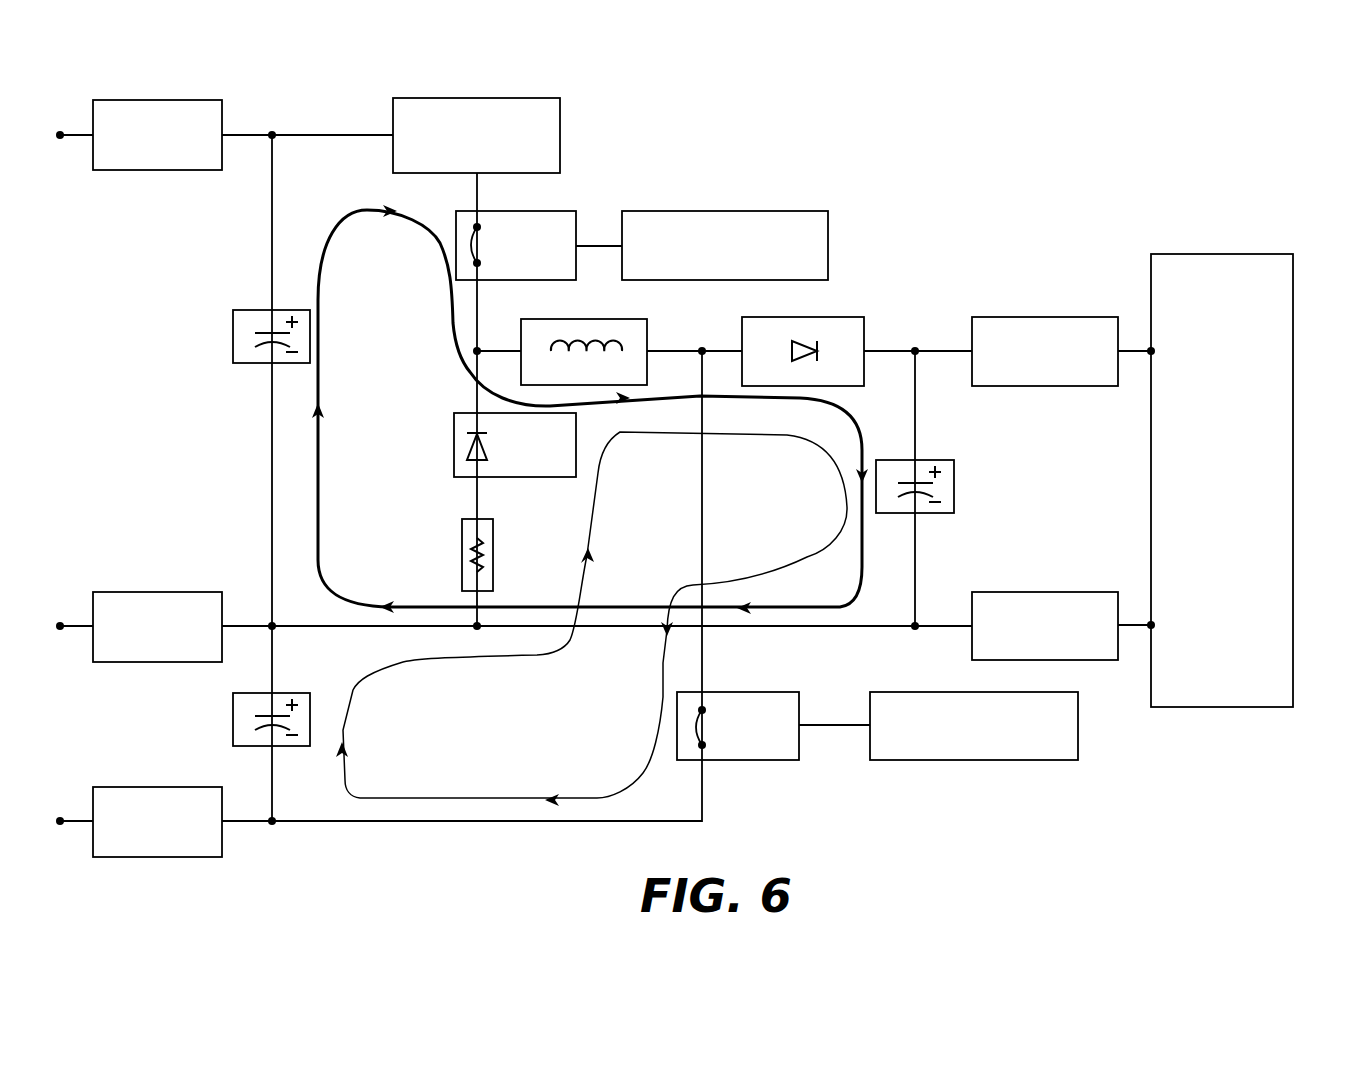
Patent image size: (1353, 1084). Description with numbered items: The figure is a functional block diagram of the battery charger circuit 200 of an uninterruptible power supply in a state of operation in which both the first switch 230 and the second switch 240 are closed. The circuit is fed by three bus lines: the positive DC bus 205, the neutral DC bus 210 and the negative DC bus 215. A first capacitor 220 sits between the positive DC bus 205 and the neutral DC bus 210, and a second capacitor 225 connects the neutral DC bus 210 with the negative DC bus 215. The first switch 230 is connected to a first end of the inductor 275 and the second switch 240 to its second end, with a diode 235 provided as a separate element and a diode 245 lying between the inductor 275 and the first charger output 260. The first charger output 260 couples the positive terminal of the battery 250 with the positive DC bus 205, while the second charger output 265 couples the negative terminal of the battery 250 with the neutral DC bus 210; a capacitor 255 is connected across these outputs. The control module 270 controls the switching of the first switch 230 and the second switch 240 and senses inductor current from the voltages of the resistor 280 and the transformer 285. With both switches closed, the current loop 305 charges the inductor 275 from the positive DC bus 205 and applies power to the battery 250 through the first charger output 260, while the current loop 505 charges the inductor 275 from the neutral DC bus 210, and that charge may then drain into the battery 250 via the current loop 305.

The battery charger circuit 200 is at (1165, 155).
The positive DC bus 205 is at (168, 172).
The neutral DC bus 210 is at (160, 592).
The negative DC bus 215 is at (165, 787).
The first capacitor 220 is at (245, 310).
The second capacitor 225 is at (300, 693).
The first switch 230 is at (498, 280).
The diode 235 is at (463, 410).
The second switch 240 is at (790, 760).
The diode 245 is at (848, 317).
The battery 250 is at (1232, 254).
The capacitor 255 is at (951, 460).
The first charger output 260 is at (1020, 317).
The second charger output 265 is at (1030, 592).
The control module 270 is at (818, 211).
The inductor 275 is at (625, 319).
The resistor 280 is at (462, 552).
The transformer 285 is at (560, 113).
The current loop 305 is at (318, 302).
The current loop 505 is at (720, 435).